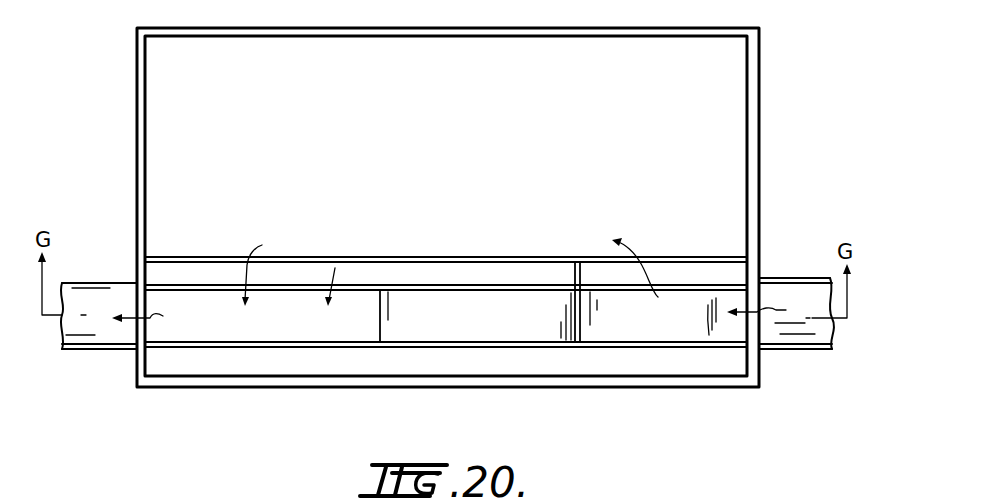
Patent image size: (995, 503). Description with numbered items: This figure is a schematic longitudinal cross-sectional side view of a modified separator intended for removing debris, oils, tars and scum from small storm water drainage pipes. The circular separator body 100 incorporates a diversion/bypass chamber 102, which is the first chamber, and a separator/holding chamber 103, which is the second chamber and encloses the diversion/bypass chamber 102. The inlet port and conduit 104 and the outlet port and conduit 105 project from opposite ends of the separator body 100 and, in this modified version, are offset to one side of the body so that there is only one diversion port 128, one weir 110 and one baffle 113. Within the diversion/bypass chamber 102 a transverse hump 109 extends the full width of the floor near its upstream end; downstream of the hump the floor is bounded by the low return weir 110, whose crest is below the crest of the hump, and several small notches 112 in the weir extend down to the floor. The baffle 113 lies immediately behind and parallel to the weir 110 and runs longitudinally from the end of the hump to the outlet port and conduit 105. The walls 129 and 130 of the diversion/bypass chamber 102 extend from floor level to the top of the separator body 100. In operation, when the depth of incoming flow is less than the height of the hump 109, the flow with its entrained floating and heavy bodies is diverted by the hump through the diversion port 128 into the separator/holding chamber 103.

The separator body 100 is at (124, 89).
The diversion/bypass chamber 102 is at (260, 337).
The separator/holding chamber 103 is at (720, 100).
The inlet port and conduit 104 is at (788, 290).
The outlet port and conduit 105 is at (103, 300).
The transverse hump 109 is at (493, 335).
The low return weir 110 is at (277, 286).
The notches 112 is at (187, 287).
The baffle wall 113 is at (318, 262).
The diversion port 128 is at (687, 268).
The wall of diversion/bypass chamber 129 is at (605, 280).
The wall of diversion/bypass chamber 130 is at (605, 335).